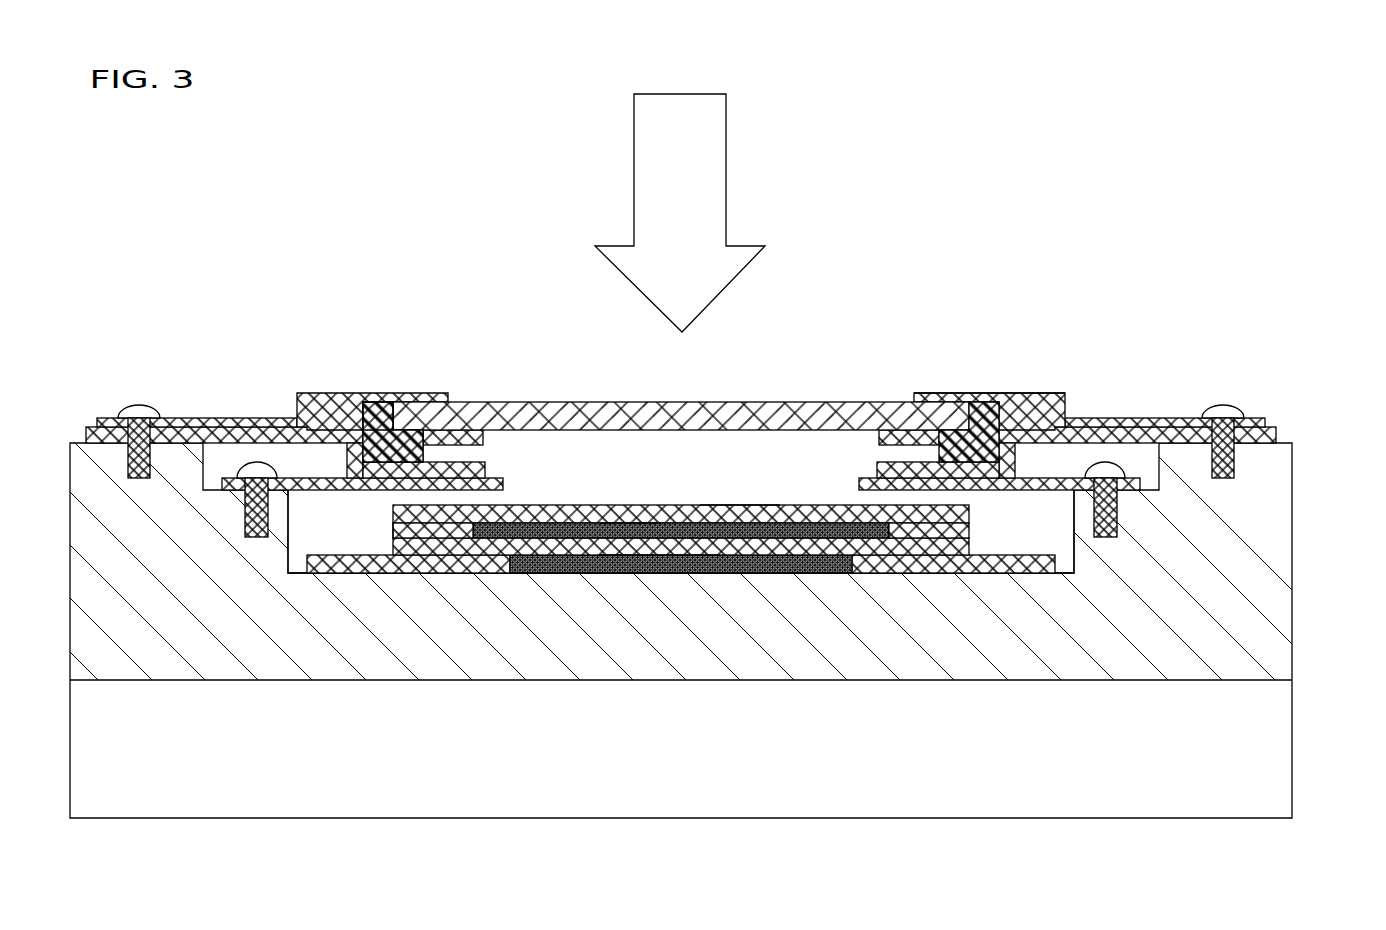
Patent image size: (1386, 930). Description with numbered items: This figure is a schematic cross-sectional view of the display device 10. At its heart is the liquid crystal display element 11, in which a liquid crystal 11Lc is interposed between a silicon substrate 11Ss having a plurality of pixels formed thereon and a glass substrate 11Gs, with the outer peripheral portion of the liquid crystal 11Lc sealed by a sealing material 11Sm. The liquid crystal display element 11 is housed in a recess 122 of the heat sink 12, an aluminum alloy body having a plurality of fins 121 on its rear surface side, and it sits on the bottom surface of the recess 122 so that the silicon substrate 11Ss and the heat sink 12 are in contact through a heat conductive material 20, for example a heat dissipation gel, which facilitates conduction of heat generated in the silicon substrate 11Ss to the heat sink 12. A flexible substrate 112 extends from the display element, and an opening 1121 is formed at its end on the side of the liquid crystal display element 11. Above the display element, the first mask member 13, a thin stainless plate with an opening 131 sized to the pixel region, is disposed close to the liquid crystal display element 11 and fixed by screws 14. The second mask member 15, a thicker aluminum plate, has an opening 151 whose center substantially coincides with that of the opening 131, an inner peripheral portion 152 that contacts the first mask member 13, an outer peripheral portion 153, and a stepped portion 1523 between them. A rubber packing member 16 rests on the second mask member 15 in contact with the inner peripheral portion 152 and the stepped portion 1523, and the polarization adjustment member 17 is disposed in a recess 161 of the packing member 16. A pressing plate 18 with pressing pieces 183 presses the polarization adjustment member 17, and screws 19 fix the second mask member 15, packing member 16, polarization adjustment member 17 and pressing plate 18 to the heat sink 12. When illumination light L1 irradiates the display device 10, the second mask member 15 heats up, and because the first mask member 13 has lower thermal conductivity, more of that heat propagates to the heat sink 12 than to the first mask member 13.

The display device 10 is at (927, 287).
The liquid crystal display element 11 is at (693, 482).
The liquid crystal 11Lc is at (625, 522).
The glass substrate 11Gs is at (735, 505).
The sealing material 11Sm is at (393, 528).
The silicon substrate 11Ss is at (660, 560).
The heat sink 12 is at (1293, 561).
The fins 121 is at (950, 800).
The recess 122 is at (288, 545).
The flexible substrate 112 is at (992, 555).
The opening 1121 is at (817, 575).
The first mask member 13 is at (292, 427).
The opening 131 is at (505, 485).
The screws 14 is at (250, 462).
The second mask member 15 is at (317, 417).
The opening 151 is at (486, 470).
The inner peripheral portion 152 is at (472, 405).
The stepped portion 1523 is at (1030, 395).
The outer peripheral portion 153 is at (178, 418).
The packing member 16 is at (375, 428).
The recess 161 is at (405, 428).
The polarization adjustment member 17 is at (852, 402).
The pressing plate 18 is at (1150, 418).
The pressing pieces 183 is at (362, 425).
The screws 19 is at (137, 404).
The heat conductive material 20 is at (806, 550).
The illumination light L1 is at (728, 157).